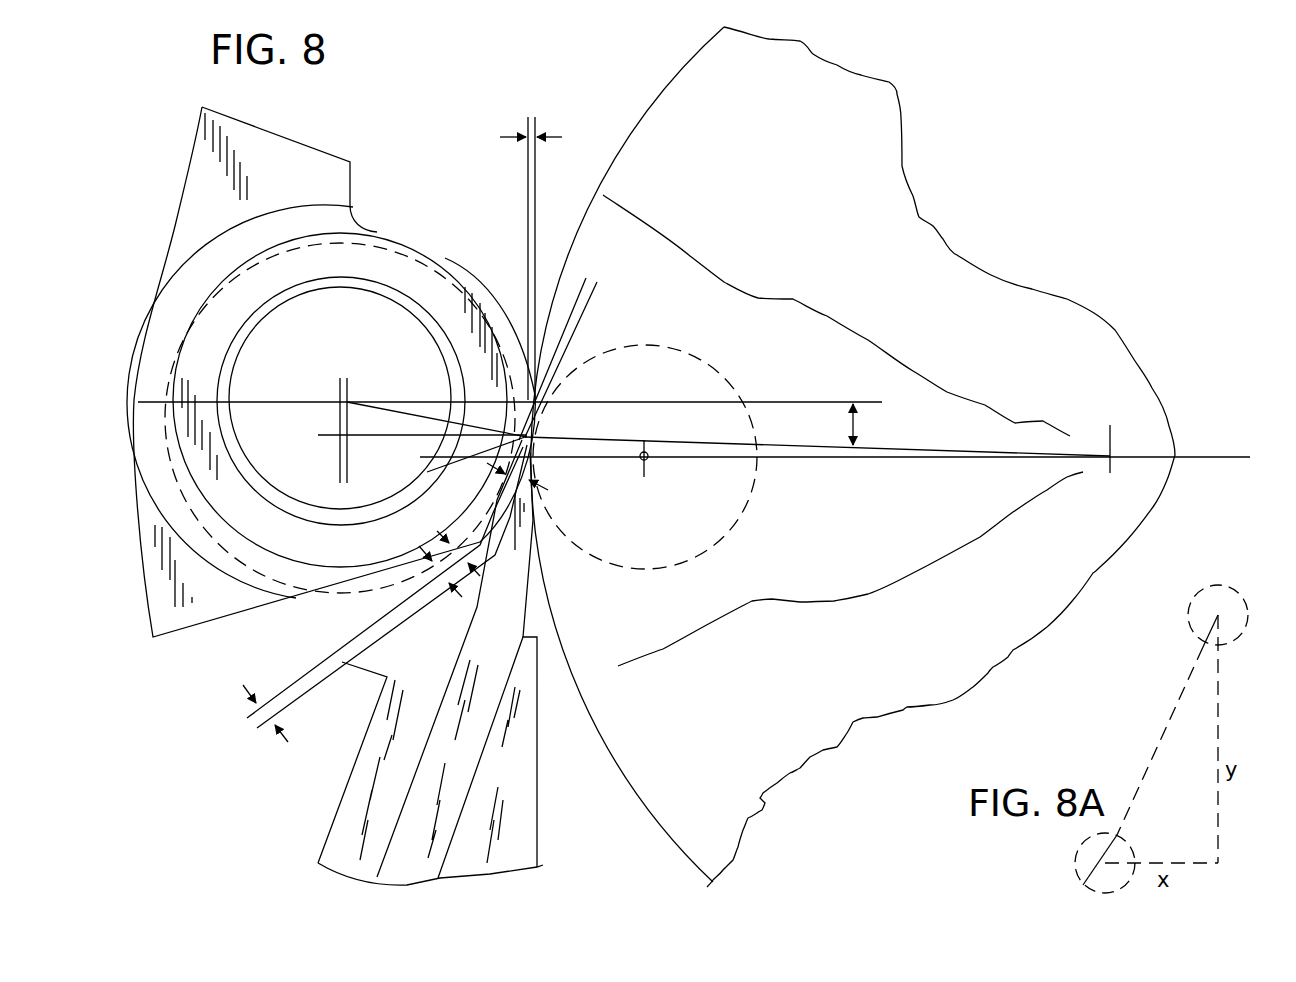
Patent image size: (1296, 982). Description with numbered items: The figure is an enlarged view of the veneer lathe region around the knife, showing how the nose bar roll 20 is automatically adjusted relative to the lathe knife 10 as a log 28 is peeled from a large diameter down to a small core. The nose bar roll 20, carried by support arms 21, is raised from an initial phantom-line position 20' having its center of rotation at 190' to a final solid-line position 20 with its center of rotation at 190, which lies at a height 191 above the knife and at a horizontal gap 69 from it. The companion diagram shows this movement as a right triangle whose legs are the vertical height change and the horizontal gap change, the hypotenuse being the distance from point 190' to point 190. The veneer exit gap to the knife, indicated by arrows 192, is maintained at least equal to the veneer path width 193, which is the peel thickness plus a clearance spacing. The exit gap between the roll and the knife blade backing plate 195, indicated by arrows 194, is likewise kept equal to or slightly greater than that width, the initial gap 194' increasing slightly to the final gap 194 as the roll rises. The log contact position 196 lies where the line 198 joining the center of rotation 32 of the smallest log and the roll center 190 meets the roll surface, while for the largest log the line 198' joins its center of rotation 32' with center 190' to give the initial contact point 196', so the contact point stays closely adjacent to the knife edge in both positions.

In FIG. 8, the lathe knife 10 is at (507, 641).
In FIG. 8, the nose bar roll 20 is at (340, 397).
In FIG. 8, the initial position of nose bar roll 20' is at (340, 427).
In FIG. 8, the support arms 21 is at (340, 160).
In FIG. 8, the log 28 is at (615, 729).
In FIG. 8, the center of rotation of the log 32 is at (645, 457).
In FIG. 8, the center of rotation of the largest log 32' is at (835, 477).
In FIG. 8, the horizontal gap 69 is at (532, 117).
In FIG. 8, the center of rotation of nose bar roll 190 is at (510, 404).
In FIG. 8A, the center of rotation of nose bar roll 190 is at (1232, 593).
In FIG. 8, the initial center of rotation of nose bar roll 190' is at (392, 448).
In FIG. 8A, the initial center of rotation of nose bar roll 190' is at (1077, 869).
In FIG. 8, the height 191 is at (854, 426).
In FIG. 8, the veneer exit gap to knife 192 is at (525, 460).
In FIG. 8, the veneer path width 193 is at (255, 722).
In FIG. 8, the veneer exit gap to backing plate 194 is at (488, 578).
In FIG. 8, the initial exit gap to backing plate 194' is at (429, 593).
In FIG. 8, the knife blade backing plate 195 is at (373, 773).
In FIG. 8, the log contact position 196 is at (437, 405).
In FIG. 8, the initial log contact point 196' is at (452, 461).
In FIG. 8, the line 198 is at (817, 411).
In FIG. 8, the line for largest log 198' is at (681, 404).